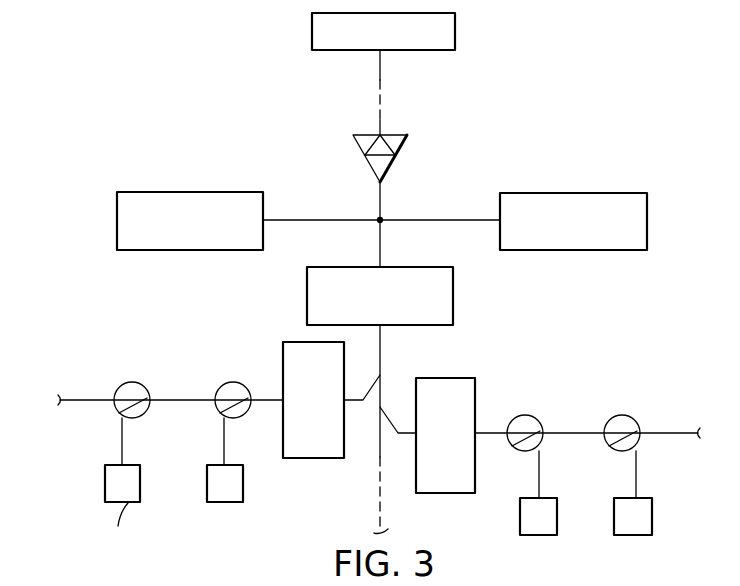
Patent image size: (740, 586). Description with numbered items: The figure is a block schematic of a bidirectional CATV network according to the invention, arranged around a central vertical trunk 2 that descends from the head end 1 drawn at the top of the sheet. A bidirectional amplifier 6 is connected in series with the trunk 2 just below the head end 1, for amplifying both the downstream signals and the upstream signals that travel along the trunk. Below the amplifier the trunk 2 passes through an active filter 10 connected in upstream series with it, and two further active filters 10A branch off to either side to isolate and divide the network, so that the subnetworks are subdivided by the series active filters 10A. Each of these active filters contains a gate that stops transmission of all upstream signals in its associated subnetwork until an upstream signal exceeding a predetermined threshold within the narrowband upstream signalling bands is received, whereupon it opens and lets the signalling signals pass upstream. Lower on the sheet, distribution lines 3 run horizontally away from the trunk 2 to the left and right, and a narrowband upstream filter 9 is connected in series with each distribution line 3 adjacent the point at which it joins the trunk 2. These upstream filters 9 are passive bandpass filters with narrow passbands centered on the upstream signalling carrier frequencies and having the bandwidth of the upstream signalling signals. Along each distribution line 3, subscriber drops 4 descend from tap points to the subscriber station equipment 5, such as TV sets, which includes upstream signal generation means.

The head end 1 is at (455, 30).
The trunk 2 is at (378, 62).
The bidirectional amplifier 6 is at (400, 156).
The active filter 10A is at (235, 190).
The active filter 10 is at (453, 292).
The narrowband upstream filter 9 is at (283, 358).
The distribution line 3 is at (268, 402).
The subscriber drop 4 is at (120, 433).
The subscriber station equipment 5 is at (140, 481).